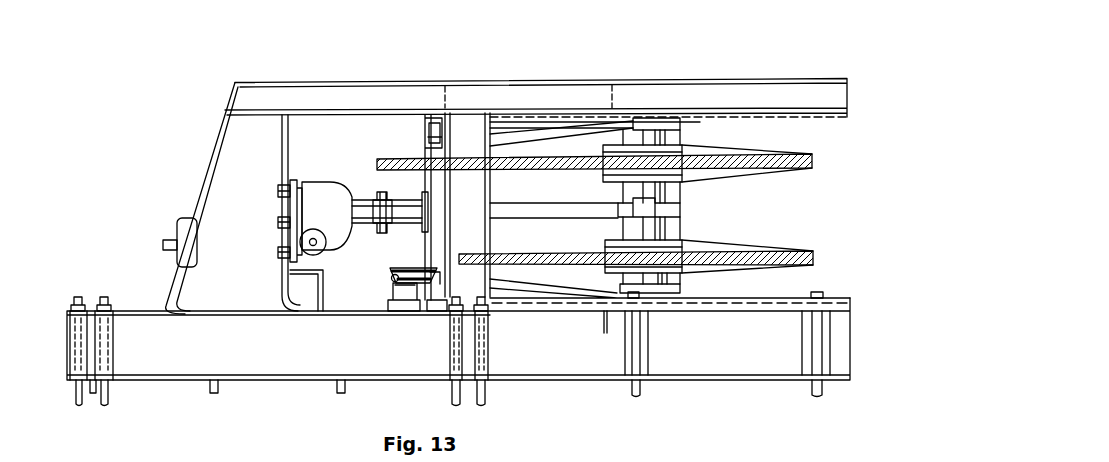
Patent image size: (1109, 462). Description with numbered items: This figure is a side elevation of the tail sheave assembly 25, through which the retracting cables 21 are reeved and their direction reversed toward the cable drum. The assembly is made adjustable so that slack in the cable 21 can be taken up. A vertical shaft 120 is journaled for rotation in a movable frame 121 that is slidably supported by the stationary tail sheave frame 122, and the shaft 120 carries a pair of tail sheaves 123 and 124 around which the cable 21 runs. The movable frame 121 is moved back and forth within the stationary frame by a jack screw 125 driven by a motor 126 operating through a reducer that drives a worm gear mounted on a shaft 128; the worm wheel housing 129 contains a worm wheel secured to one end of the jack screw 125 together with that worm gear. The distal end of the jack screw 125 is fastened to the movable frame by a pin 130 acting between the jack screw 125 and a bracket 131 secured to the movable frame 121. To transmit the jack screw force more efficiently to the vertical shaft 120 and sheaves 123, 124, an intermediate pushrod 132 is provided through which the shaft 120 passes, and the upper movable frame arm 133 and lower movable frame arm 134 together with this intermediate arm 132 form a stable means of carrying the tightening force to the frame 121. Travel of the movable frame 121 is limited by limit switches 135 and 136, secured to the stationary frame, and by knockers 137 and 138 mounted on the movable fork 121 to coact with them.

The retracting cable 21 is at (474, 172).
The tail sheave assembly 25 is at (540, 78).
The vertical shaft 120 is at (651, 118).
The movable frame 121 is at (572, 126).
The stationary tail sheave frame 122 is at (748, 79).
The tail sheave 123 is at (782, 157).
The tail sheave 124 is at (770, 244).
The jack screw 125 is at (351, 195).
The motor 126 is at (183, 218).
The shaft 128 is at (323, 248).
The worm wheel housing 129 is at (308, 183).
The pin 130 is at (375, 285).
The bracket 131 is at (407, 198).
The intermediate pushrod 132 is at (562, 203).
The upper movable frame arm 133 is at (518, 130).
The lower movable frame arm 134 is at (509, 298).
The limit switch 135 is at (414, 300).
The limit switch 136 is at (604, 320).
The knocker 137 is at (420, 268).
The knocker 138 is at (440, 278).